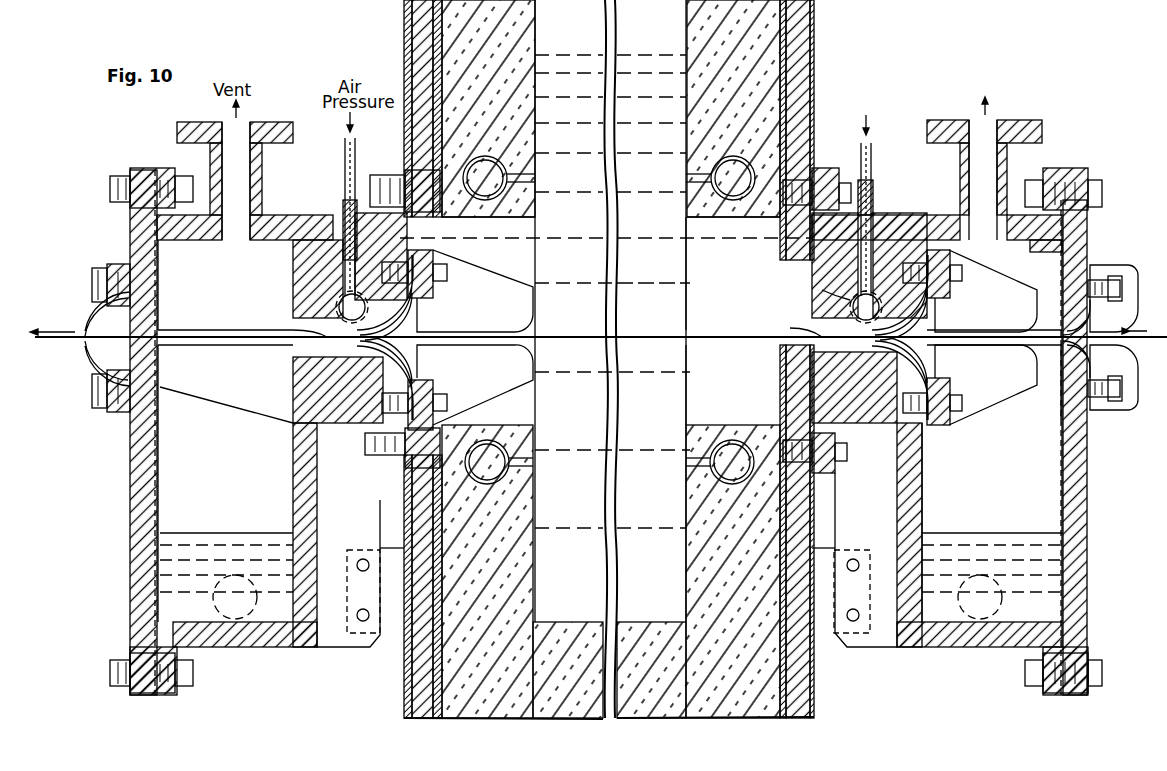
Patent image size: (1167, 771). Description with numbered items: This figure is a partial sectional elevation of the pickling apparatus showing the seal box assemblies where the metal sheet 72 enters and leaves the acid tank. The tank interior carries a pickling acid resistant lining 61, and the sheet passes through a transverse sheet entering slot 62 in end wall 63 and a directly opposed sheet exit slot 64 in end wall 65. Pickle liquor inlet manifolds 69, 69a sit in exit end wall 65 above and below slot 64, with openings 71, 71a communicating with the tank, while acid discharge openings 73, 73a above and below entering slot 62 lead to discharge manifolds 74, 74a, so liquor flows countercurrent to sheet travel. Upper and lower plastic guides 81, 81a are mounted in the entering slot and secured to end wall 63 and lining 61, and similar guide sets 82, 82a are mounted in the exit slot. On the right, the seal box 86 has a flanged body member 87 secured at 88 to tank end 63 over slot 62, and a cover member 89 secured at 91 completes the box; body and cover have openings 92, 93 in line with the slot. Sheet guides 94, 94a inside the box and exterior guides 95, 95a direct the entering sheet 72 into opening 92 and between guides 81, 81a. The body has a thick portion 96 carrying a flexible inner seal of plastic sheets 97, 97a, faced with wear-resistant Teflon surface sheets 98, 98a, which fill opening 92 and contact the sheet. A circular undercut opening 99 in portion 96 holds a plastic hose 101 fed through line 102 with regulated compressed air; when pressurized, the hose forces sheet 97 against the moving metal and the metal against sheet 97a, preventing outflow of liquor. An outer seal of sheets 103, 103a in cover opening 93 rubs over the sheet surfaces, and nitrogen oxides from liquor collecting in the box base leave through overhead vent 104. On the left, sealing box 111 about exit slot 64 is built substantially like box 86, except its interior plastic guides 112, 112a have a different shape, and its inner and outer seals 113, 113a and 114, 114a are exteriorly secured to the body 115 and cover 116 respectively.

The pickling acid resistant lining 61 is at (522, 32).
The sheet entering slot 62 is at (690, 219).
The end wall 63 is at (806, 62).
The sheet exit slot 64 is at (527, 220).
The end wall 65 is at (406, 58).
The pickle liquor inlet manifold 69 is at (478, 190).
The pickle liquor inlet manifold 69a is at (490, 448).
The openings 71 is at (533, 176).
The openings 71a is at (530, 463).
The sheet 72 is at (64, 340).
The acid discharge openings 73 is at (688, 178).
The acid discharge openings 73a is at (688, 463).
The discharge manifold 74 is at (722, 190).
The discharge manifold 74a is at (725, 445).
The plastic guides 81 is at (693, 272).
The plastic guides 81a is at (694, 362).
The guide set 82 is at (514, 284).
The guide set 82a is at (528, 368).
The seal box 86 is at (1004, 498).
The flanged body member 87 is at (1022, 240).
The securing means 88 is at (845, 178).
The cover member 89 is at (1082, 450).
The securing means 91 is at (1100, 192).
The opening 92 is at (830, 353).
The opening 93 is at (1068, 382).
The sheet guide 94 is at (1003, 283).
The sheet guide 94a is at (988, 400).
The exterior guide 95 is at (1128, 272).
The exterior guide 95a is at (1120, 410).
The body portion 96 is at (924, 217).
The plastic sealing sheet 97 is at (945, 299).
The plastic sealing sheet 97a is at (945, 378).
The Teflon surface sheet 98 is at (938, 315).
The Teflon surface sheet 98a is at (940, 359).
The undercut opening 99 is at (832, 318).
The plastic hose 101 is at (840, 300).
The line 102 is at (871, 172).
The outer seal sheet 103 is at (1086, 322).
The outer seal sheet 103a is at (1086, 350).
The overhead vent 104 is at (990, 128).
The sealing box 111 is at (234, 459).
The interior plastic guide 112 is at (234, 292).
The interior plastic guide 112a is at (222, 398).
The inner plastic seal 113 is at (418, 318).
The inner plastic seal 113a is at (418, 360).
The outer plastic seal 114 is at (118, 326).
The outer plastic seal 114a is at (116, 355).
The body 115 is at (293, 256).
The cover 116 is at (133, 235).